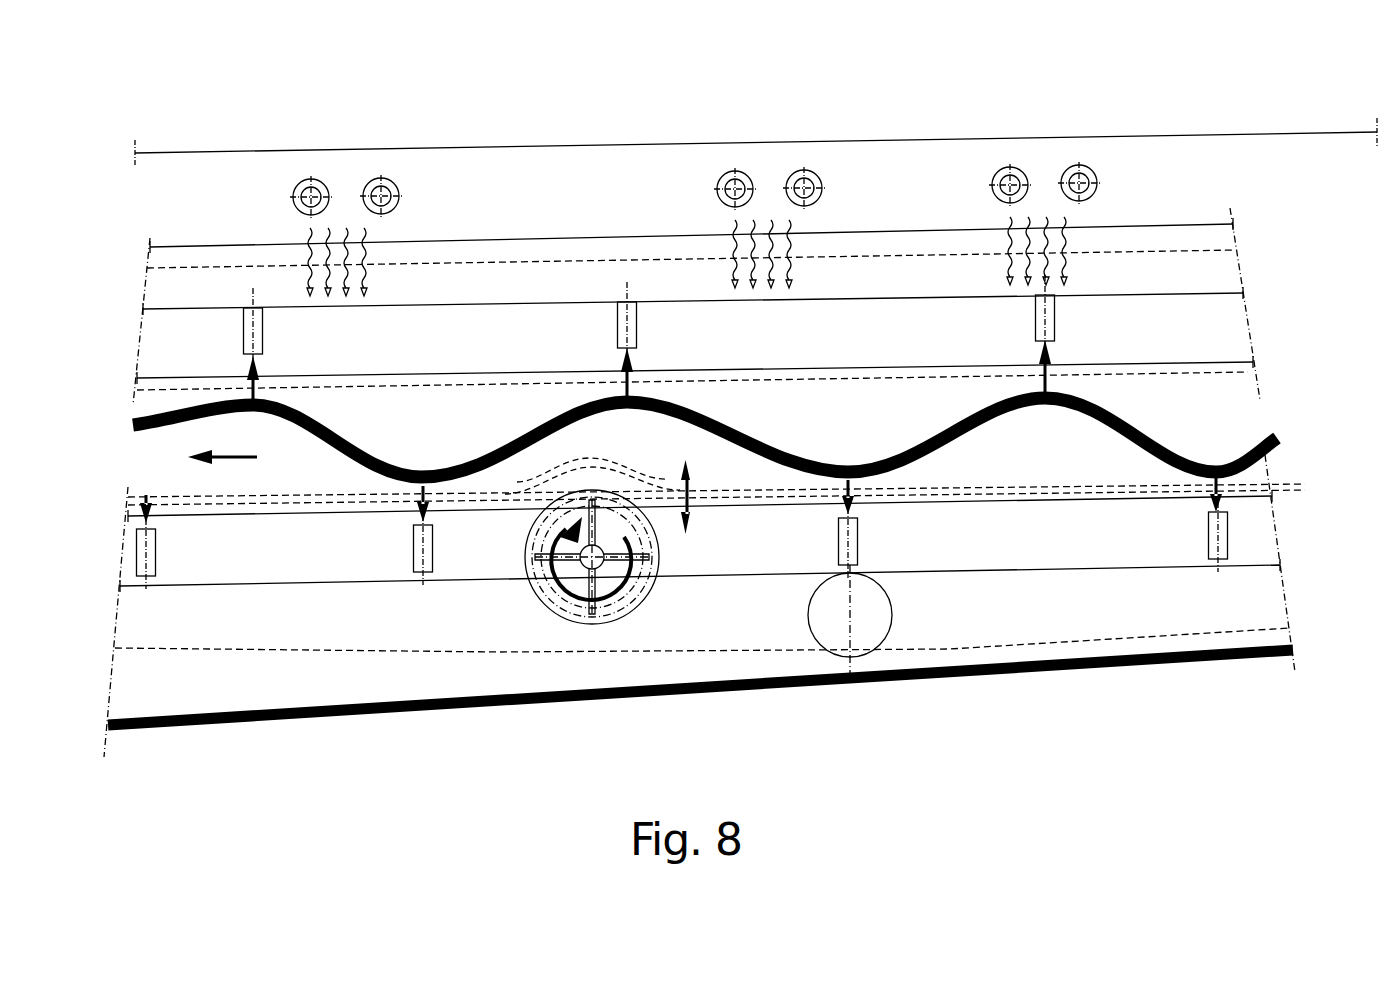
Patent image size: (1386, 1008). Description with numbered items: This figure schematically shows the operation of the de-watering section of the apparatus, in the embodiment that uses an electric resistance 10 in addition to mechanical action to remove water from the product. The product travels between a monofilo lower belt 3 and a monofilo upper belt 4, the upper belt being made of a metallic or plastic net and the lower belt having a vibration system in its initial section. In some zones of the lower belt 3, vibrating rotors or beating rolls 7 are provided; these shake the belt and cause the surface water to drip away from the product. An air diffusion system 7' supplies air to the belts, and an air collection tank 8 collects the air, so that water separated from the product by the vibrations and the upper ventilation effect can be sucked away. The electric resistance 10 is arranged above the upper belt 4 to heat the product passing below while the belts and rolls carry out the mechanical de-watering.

The monofilo lower belt 3 is at (1262, 539).
The monofilo upper belt 4 is at (1233, 330).
The vibrating rotor 7 is at (592, 589).
The air diffusion system 7' is at (870, 596).
The air collection tank 8 is at (1115, 668).
The electric resistance 10 is at (313, 181).